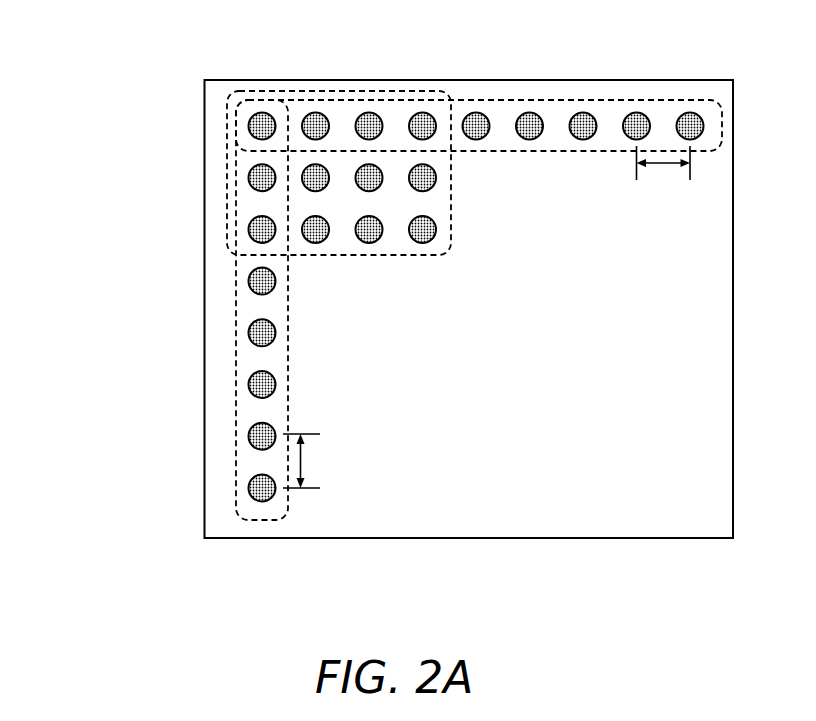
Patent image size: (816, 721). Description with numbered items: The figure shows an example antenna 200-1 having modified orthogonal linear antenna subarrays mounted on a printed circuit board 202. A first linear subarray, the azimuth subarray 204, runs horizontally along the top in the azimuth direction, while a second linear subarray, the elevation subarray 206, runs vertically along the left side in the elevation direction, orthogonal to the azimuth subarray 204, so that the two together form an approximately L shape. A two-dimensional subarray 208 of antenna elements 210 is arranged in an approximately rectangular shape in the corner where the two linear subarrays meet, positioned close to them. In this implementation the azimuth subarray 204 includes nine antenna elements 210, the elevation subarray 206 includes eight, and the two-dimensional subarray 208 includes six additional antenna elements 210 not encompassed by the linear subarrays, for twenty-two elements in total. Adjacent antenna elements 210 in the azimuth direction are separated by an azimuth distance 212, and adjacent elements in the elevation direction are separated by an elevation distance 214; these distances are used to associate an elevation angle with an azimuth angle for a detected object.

The antenna 200-1 is at (188, 46).
The printed circuit board 202 is at (470, 538).
The azimuth subarray 204 is at (478, 100).
The elevation subarray 206 is at (261, 524).
The 2D subarray 208 is at (228, 163).
The antenna element 210 is at (272, 288).
The azimuth distance 212 is at (663, 163).
The elevation distance 214 is at (302, 462).